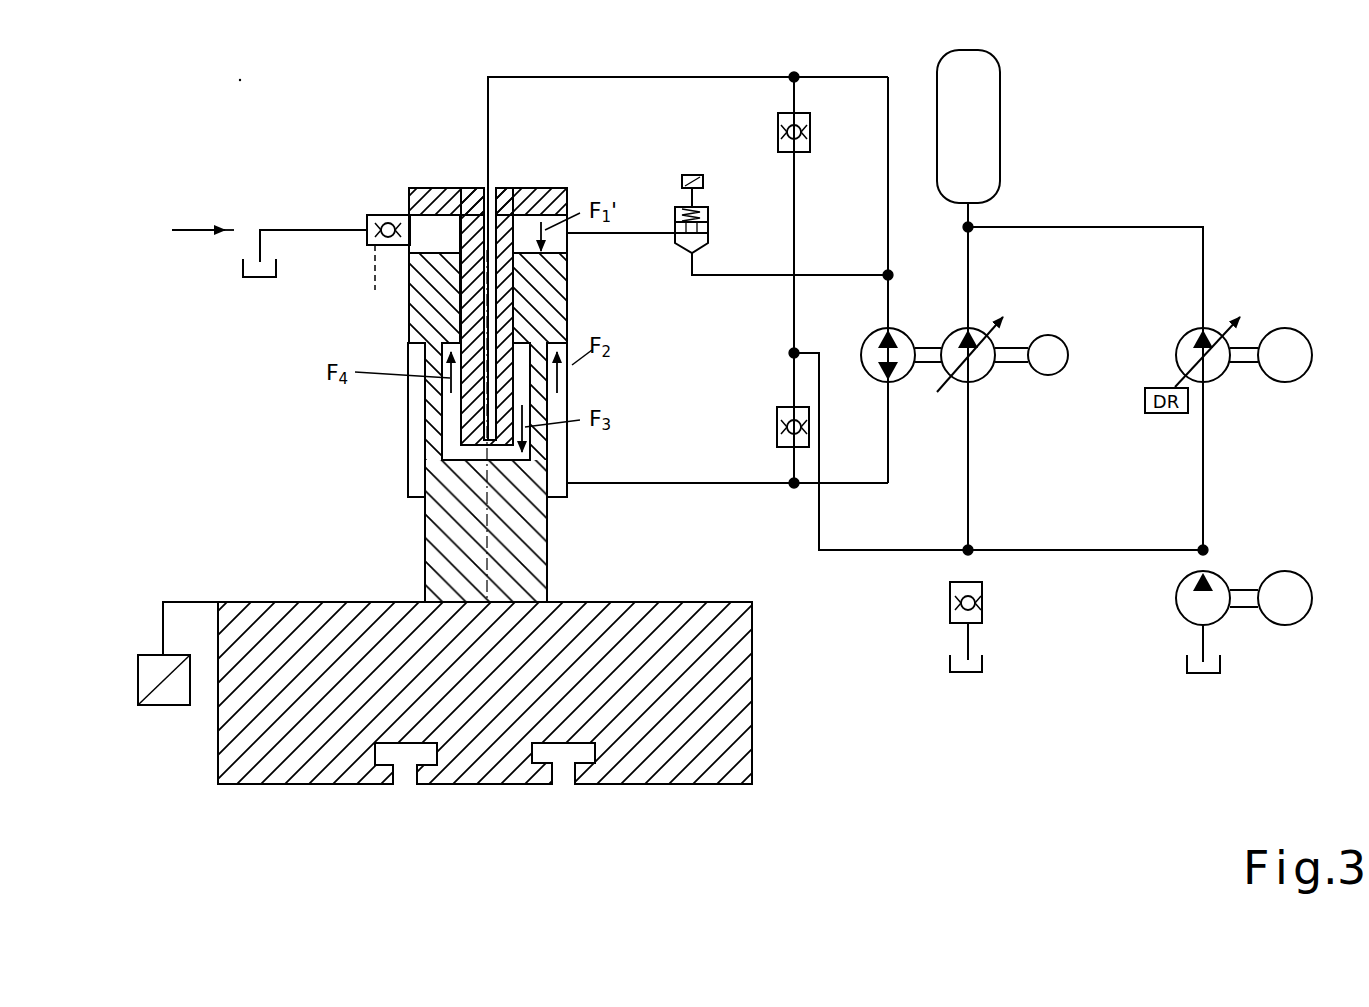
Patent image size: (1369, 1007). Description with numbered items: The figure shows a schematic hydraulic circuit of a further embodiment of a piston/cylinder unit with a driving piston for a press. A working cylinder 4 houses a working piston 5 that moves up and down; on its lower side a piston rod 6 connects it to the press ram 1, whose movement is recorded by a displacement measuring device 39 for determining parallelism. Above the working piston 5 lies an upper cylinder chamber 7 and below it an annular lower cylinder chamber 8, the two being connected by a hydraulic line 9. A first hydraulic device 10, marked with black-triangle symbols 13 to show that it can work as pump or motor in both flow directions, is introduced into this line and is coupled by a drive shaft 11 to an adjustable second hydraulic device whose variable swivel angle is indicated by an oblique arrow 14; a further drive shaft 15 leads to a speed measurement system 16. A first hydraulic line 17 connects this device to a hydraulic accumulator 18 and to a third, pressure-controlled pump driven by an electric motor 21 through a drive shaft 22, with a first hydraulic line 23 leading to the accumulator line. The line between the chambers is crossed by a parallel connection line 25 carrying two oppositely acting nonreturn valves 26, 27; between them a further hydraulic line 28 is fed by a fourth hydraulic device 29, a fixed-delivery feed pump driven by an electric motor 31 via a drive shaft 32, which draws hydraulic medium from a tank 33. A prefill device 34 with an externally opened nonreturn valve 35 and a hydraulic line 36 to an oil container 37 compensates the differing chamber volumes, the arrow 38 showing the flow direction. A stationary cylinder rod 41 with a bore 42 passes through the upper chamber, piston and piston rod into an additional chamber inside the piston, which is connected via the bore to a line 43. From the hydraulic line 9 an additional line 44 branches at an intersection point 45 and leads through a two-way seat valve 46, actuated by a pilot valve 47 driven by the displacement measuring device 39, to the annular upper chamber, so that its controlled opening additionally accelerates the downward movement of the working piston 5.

The press ram 1 is at (735, 725).
The working cylinder 4 is at (398, 414).
The working piston 5 is at (441, 319).
The piston rod 6 is at (515, 528).
The upper cylinder chamber 7 is at (446, 246).
The lower cylinder chamber 8 is at (418, 462).
The hydraulic line 9 is at (840, 73).
The first hydraulic device 10 is at (872, 325).
The drive shaft 11 is at (924, 350).
The symbols (black triangles) 13 is at (863, 345).
The arrow 14 is at (1004, 326).
The drive shaft 15 is at (1015, 360).
The speed measurement system 16 is at (1063, 353).
The first hydraulic line 17 is at (970, 253).
The hydraulic accumulator 18 is at (953, 145).
The electric motor 21 is at (1302, 340).
The drive shaft 22 is at (1237, 360).
The first hydraulic line 23 is at (1150, 225).
The parallel connection line 25 is at (786, 327).
The nonreturn valve 26 is at (804, 120).
The nonreturn valve 27 is at (778, 435).
The further hydraulic line 28 is at (822, 505).
The fourth hydraulic device 29 is at (1247, 568).
The electric motor 31 is at (1303, 600).
The drive shaft 32 is at (1245, 600).
The tank 33 is at (1197, 666).
The prefill device 34 is at (360, 218).
The nonreturn valve 35 is at (373, 245).
The hydraulic line 36 is at (328, 232).
The oil container 37 is at (253, 278).
The arrow 38 is at (193, 228).
The displacement measuring device 39 is at (158, 698).
The cylinder rod 41 is at (500, 300).
The bore 42 is at (492, 190).
The line 43 is at (578, 72).
The additional line 44 is at (750, 273).
The intersection point 45 is at (885, 272).
The two-way seat valve 46 is at (675, 215).
The pilot valve 47 is at (703, 183).